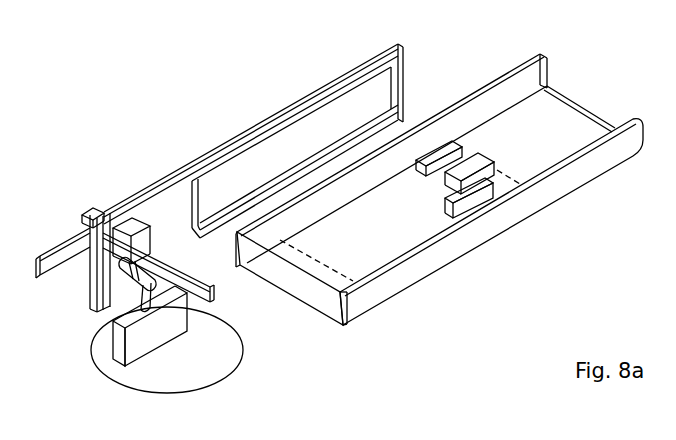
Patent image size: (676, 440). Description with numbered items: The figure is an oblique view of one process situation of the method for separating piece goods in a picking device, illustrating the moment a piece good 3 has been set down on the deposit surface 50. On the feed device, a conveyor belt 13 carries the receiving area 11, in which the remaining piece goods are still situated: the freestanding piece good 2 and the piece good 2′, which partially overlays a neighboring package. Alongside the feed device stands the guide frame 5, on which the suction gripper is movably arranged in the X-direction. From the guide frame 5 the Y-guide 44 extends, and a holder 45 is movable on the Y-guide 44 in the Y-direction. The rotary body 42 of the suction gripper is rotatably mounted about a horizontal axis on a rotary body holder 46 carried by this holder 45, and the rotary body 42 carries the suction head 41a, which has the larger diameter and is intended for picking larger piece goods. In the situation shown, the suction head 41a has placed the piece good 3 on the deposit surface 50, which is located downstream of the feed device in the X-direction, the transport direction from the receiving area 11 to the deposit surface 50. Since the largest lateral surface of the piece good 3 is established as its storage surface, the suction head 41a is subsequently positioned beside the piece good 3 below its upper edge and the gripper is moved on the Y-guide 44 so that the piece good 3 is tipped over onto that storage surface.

The piece good 2 is at (468, 203).
The piece good 2′ is at (442, 163).
The piece good 3 is at (146, 340).
The guide frame 5 is at (287, 121).
The receiving area 11 is at (387, 237).
The conveyor belt 13 is at (573, 130).
The suction head 41a is at (122, 317).
The rotary body 42 is at (150, 312).
The Y-guide 44 is at (167, 240).
The holder 45 is at (131, 228).
The rotary body holder 46 is at (126, 277).
The deposit surface 50 is at (207, 372).